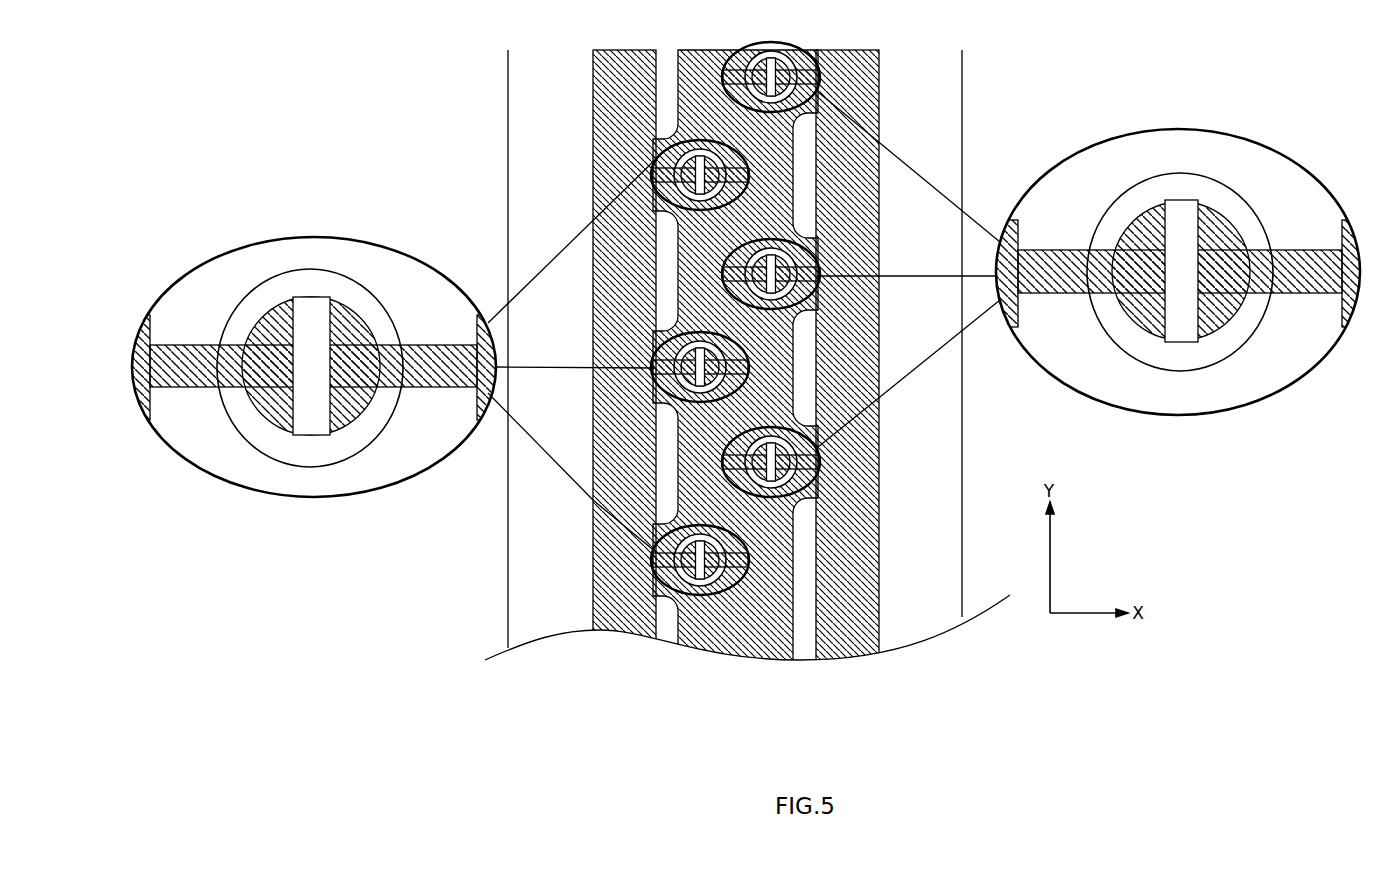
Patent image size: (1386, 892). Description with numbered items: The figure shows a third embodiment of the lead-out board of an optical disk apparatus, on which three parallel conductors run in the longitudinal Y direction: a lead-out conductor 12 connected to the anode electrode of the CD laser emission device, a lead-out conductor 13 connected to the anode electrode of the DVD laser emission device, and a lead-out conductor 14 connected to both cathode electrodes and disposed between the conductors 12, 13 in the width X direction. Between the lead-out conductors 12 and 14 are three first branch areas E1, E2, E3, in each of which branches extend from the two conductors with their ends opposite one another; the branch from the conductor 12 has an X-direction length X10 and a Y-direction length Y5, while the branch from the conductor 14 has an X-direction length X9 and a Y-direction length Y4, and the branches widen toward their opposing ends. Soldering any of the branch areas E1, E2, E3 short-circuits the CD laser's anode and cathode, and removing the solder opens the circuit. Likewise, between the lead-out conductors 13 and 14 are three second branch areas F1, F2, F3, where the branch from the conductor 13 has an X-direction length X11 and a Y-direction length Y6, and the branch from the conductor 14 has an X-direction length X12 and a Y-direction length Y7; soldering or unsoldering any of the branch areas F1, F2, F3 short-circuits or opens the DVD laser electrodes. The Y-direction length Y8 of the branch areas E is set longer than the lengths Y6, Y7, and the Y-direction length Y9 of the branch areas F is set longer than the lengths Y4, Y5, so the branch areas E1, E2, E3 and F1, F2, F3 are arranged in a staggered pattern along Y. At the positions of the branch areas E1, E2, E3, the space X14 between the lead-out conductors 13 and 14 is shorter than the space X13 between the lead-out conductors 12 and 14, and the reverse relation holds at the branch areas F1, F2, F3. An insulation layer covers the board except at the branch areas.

The lead-out conductor 12 is at (843, 650).
The lead-out conductor 13 is at (627, 632).
The lead-out conductor 14 is at (712, 636).
The branch area E1 is at (820, 62).
The branch area E2 is at (818, 252).
The branch area E3 is at (797, 477).
The branch area F1 is at (657, 156).
The branch area F2 is at (657, 350).
The branch area F3 is at (660, 577).
The length in the X direction X9 is at (1165, 342).
The length in the X direction X10 is at (1198, 342).
The length in the X direction X11 is at (150, 433).
The length in the X direction X12 is at (477, 433).
The space between lead-out conductors 12 and 14 X13 is at (728, 63).
The space between lead-out conductors 13 and 14 X14 is at (656, 65).
The predetermined length in the Y direction Y4 is at (1172, 200).
The predetermined length in the Y direction Y5 is at (1190, 340).
The predetermined length in the Y direction Y6 is at (302, 435).
The predetermined length in the Y direction Y7 is at (322, 297).
The predetermined length in the Y direction of branch areas E Y8 is at (813, 94).
The predetermined length in the Y direction of branch areas F Y9 is at (673, 194).